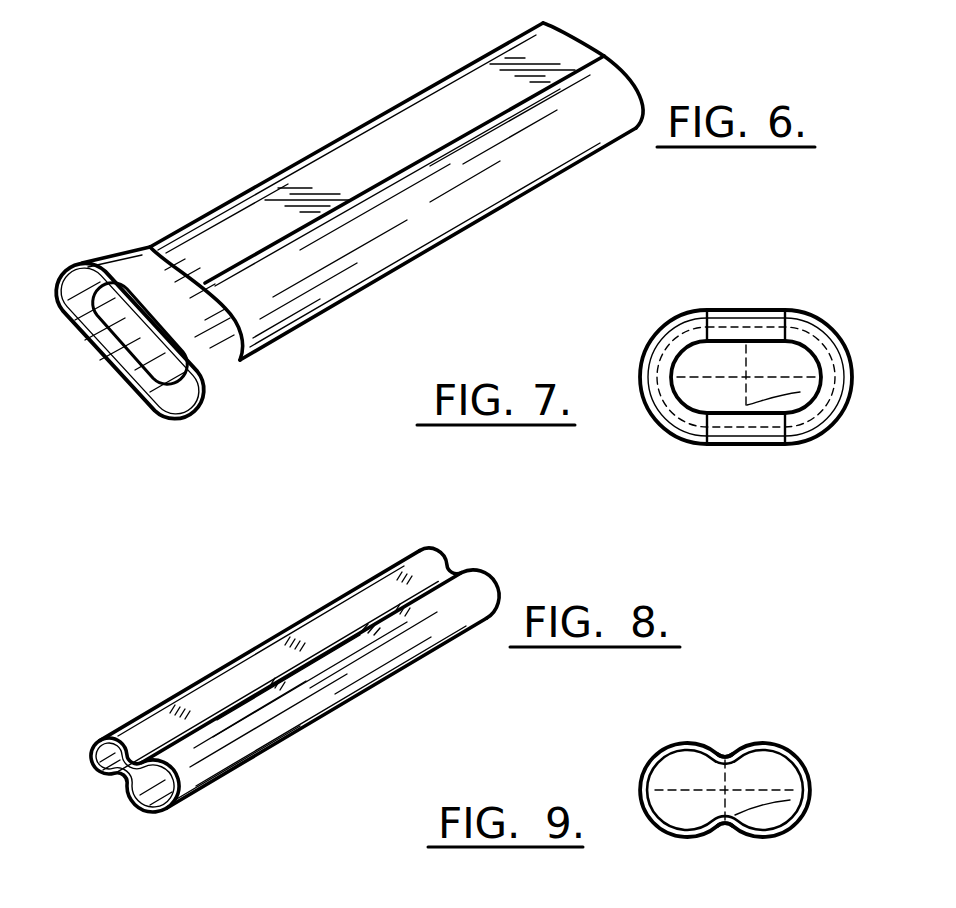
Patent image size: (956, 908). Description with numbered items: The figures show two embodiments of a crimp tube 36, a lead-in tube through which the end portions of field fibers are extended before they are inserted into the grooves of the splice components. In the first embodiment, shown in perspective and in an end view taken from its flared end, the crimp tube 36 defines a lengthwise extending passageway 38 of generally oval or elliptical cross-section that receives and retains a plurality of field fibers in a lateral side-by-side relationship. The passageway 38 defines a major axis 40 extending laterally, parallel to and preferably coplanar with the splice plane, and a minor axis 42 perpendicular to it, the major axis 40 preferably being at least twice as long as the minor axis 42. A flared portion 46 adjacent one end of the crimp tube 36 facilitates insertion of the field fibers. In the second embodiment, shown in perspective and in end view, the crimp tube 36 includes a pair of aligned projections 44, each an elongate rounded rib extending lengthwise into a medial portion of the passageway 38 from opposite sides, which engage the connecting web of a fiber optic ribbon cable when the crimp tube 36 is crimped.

In FIG. 6, the crimp tube 36 is at (606, 34).
In FIG. 7, the crimp tube 36 is at (732, 291).
In FIG. 8, the crimp tube 36 is at (446, 546).
In FIG. 9, the crimp tube 36 is at (737, 834).
In FIG. 6, the passageway 38 is at (129, 367).
In FIG. 7, the passageway 38 is at (722, 360).
In FIG. 8, the passageway 38 is at (121, 781).
In FIG. 9, the passageway 38 is at (698, 781).
In FIG. 7, the major axis 40 is at (762, 374).
In FIG. 9, the major axis 40 is at (758, 790).
In FIG. 7, the minor axis 42 is at (800, 392).
In FIG. 9, the minor axis 42 is at (790, 800).
In FIG. 9, the projection 44 is at (725, 751).
In FIG. 6, the flared portion 46 is at (74, 266).